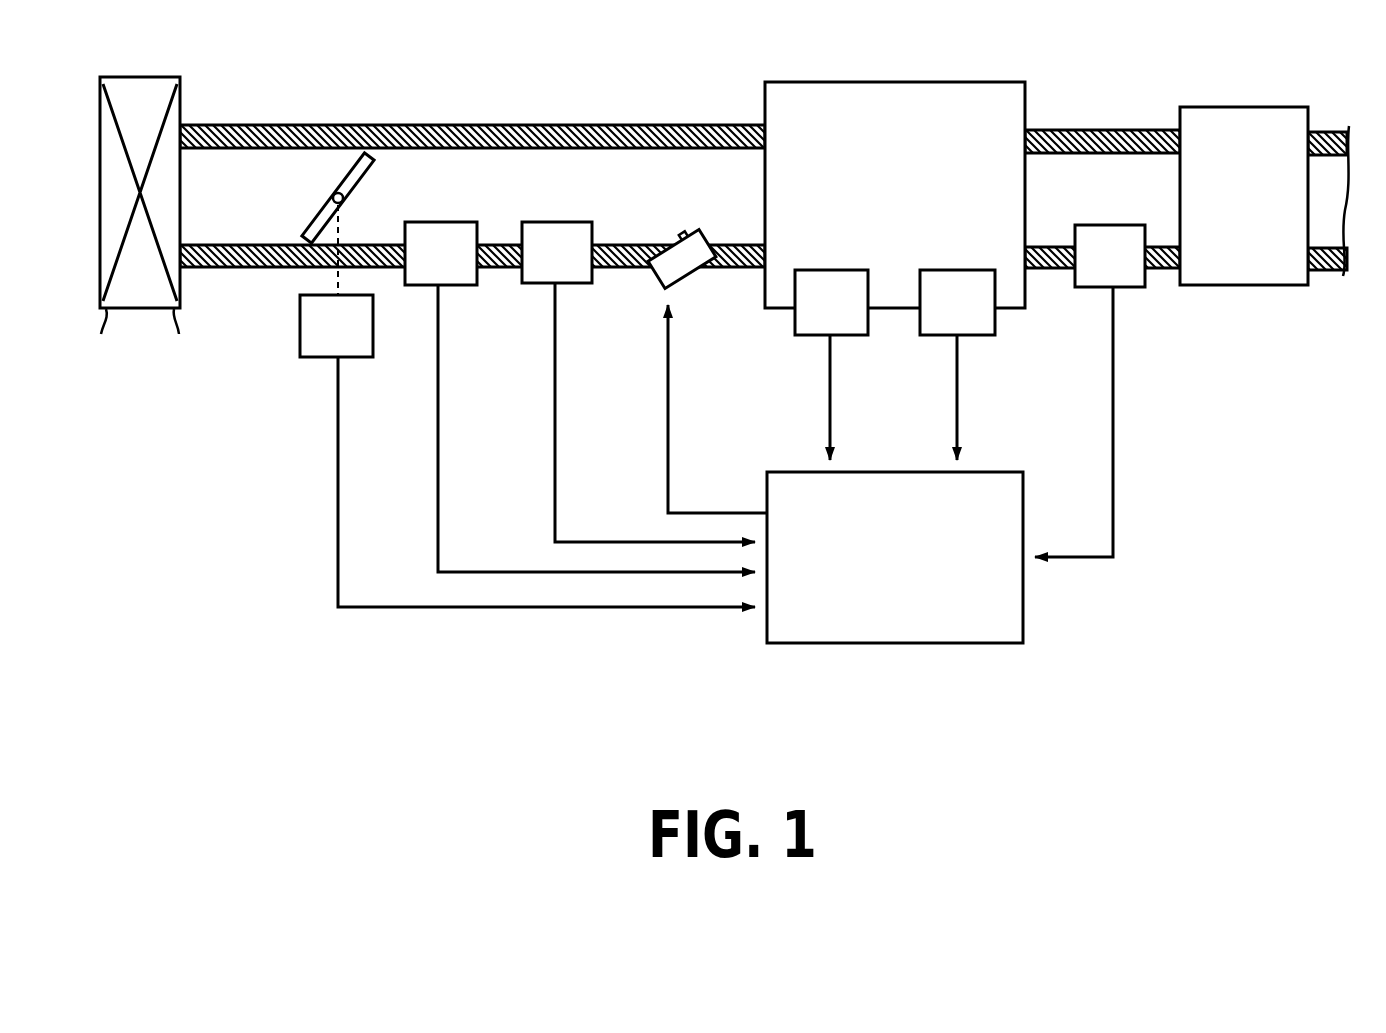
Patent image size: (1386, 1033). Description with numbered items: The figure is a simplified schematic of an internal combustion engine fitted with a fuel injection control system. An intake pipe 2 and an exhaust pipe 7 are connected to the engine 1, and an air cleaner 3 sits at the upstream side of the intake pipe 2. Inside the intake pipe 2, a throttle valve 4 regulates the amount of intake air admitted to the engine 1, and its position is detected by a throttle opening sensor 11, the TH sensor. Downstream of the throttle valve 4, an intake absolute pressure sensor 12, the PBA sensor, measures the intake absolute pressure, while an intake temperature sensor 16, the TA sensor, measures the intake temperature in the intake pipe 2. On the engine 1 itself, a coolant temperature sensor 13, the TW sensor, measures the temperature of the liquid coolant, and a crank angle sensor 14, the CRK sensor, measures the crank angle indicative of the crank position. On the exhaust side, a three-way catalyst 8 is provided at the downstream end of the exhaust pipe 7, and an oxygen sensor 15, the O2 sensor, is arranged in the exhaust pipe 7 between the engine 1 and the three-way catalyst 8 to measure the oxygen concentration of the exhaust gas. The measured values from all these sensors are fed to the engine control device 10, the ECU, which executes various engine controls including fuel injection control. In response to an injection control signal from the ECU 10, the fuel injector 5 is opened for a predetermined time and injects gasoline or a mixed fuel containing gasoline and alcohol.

The engine 1 is at (878, 112).
The intake pipe 2 is at (573, 172).
The air cleaner 3 is at (144, 76).
The throttle valve 4 is at (344, 170).
The fuel injector 5 is at (690, 285).
The exhaust pipe 7 is at (1090, 168).
The three-way catalyst 8 is at (1256, 106).
The engine control device (ECU) 10 is at (943, 644).
The throttle opening sensor (TH sensor) 11 is at (317, 358).
The intake absolute pressure sensor (PBA sensor) 12 is at (452, 286).
The coolant temperature sensor (TW sensor) 13 is at (845, 336).
The crank angle sensor (CRK sensor) 14 is at (975, 336).
The oxygen sensor (O2 sensor) 15 is at (1125, 288).
The intake temperature sensor (TA sensor) 16 is at (568, 285).